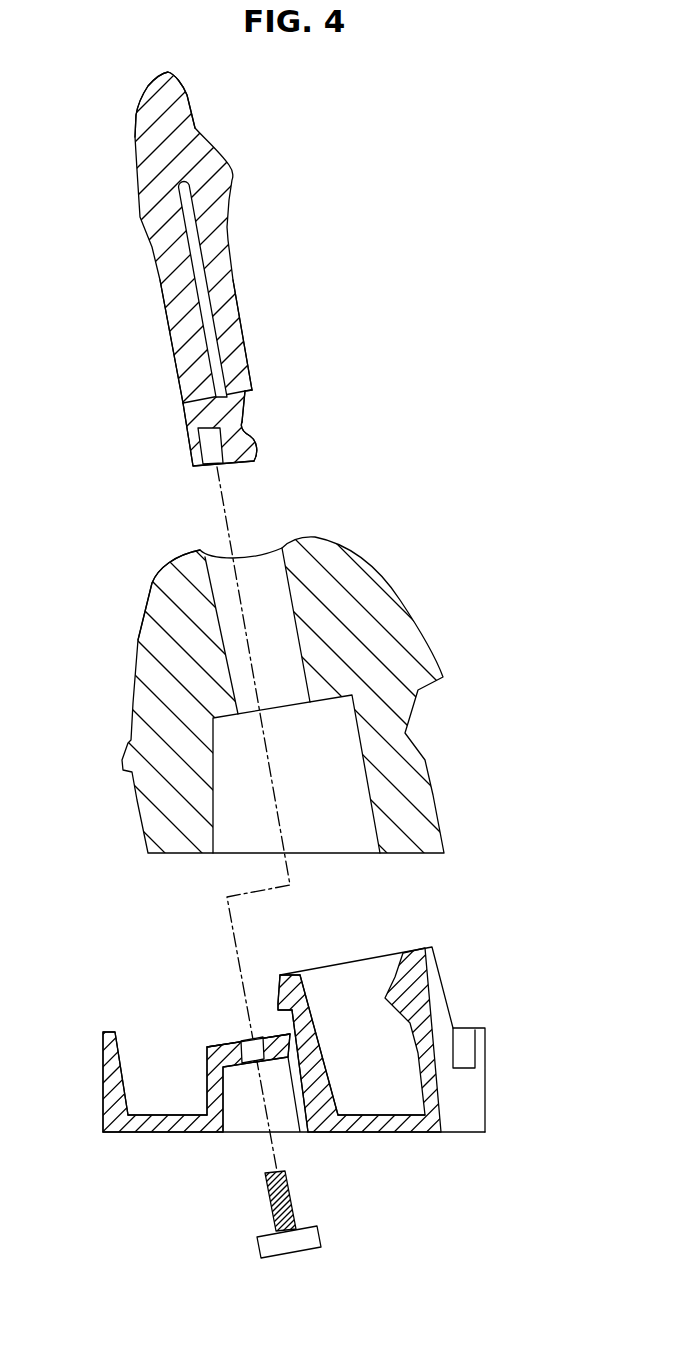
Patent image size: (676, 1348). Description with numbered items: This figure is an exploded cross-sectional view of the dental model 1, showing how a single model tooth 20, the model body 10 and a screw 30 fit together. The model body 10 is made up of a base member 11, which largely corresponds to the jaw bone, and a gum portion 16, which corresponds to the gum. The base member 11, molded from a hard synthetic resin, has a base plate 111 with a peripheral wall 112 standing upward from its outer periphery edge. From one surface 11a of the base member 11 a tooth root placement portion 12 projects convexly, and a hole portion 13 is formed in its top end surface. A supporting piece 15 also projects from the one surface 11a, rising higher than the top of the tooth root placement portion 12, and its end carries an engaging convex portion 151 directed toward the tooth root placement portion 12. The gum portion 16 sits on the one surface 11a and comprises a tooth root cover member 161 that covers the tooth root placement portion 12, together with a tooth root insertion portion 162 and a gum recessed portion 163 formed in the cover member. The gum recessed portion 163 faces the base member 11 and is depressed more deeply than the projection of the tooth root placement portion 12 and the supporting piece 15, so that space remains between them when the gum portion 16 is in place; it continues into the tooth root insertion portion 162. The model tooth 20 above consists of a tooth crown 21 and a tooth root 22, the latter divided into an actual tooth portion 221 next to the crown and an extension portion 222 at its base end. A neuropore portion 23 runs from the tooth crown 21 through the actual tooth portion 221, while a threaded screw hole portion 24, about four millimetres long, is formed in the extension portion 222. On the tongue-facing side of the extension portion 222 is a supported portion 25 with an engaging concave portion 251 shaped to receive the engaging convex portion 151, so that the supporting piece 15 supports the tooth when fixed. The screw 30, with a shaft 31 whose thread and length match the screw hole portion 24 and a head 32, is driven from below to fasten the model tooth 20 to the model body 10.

The dental model 1 is at (402, 214).
The model body 10 is at (528, 493).
The base member 11 is at (418, 944).
The one surface of the base member 11a is at (172, 1115).
The base plate 111 is at (402, 1134).
The peripheral wall 112 is at (113, 1077).
The tooth root placement portion 12 is at (232, 1038).
The hole portion 13 is at (258, 1044).
The supporting piece 15 is at (320, 1027).
The engaging convex portion 151 is at (300, 1008).
The gum portion 16 is at (338, 539).
The tooth root cover member 161 is at (162, 608).
The tooth root insertion portion 162 is at (220, 568).
The gum recessed portion 163 is at (340, 798).
The model tooth 20 is at (210, 140).
The tooth crown 21 is at (156, 124).
The tooth root 22 is at (175, 313).
The actual tooth portion 221 is at (161, 341).
The extension portion 222 is at (173, 434).
The neuropore portion 23 is at (191, 204).
The screw hole portion 24 is at (206, 453).
The supported portion 25 is at (258, 444).
The engaging concave portion 251 is at (246, 422).
The screw 30 is at (302, 1215).
The shaft 31 is at (272, 1202).
The head 32 is at (262, 1245).